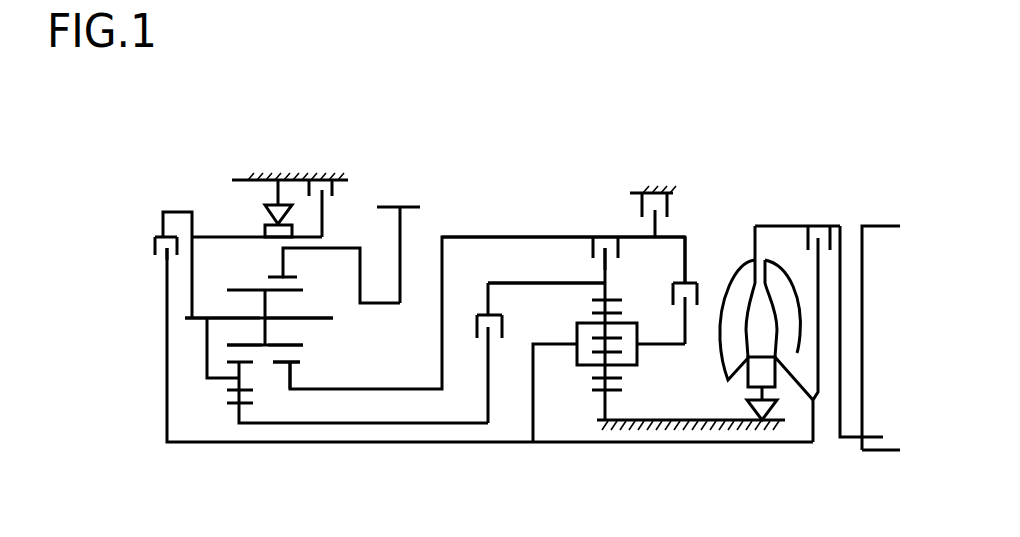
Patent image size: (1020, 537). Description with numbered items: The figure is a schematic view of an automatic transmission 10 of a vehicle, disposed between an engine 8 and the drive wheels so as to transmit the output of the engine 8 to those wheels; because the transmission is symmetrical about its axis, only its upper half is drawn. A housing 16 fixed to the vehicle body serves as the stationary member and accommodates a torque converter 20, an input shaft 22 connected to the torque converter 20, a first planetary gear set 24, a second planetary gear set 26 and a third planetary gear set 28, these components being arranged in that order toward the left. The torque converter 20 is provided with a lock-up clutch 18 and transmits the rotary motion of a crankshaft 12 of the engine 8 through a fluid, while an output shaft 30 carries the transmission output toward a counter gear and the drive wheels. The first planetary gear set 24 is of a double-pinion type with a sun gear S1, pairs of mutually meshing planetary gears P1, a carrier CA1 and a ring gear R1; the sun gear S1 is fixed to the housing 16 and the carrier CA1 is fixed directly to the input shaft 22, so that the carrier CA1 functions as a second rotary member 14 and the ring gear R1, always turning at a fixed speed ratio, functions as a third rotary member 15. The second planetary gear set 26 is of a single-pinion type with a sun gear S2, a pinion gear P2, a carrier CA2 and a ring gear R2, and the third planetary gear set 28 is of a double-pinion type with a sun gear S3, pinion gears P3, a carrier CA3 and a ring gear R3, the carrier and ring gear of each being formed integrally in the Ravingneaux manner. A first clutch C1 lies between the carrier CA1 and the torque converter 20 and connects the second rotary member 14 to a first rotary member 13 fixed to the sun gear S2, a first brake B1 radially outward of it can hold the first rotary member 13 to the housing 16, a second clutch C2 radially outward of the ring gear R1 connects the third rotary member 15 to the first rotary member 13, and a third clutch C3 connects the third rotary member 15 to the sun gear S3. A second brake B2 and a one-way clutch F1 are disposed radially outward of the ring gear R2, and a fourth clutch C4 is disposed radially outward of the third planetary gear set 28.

The automatic transmission 10 is at (737, 115).
The engine 8 is at (883, 233).
The crankshaft 12 is at (849, 440).
The second rotary member 14 is at (678, 345).
The third rotary member 15 is at (530, 283).
The housing 16 is at (250, 178).
The lock-up clutch 18 is at (838, 226).
The torque converter 20 is at (778, 209).
The input shaft 22 is at (754, 442).
The first planetary gear set 24 is at (610, 461).
The second planetary gear set 26 is at (298, 460).
The third planetary gear set 28 is at (240, 461).
The output shaft 30 is at (387, 207).
The first rotary member 13 is at (566, 237).
The one-way clutch F1 is at (278, 195).
The first brake B1 is at (655, 199).
The second brake B2 is at (320, 195).
The first clutch C1 is at (678, 290).
The second clutch C2 is at (619, 253).
The third clutch C3 is at (496, 353).
The fourth clutch C4 is at (161, 265).
The sun gear S1 is at (596, 390).
The sun gear S2 is at (293, 367).
The sun gear S3 is at (245, 402).
The planetary gears P1 is at (620, 378).
The pinion gear P2 is at (289, 345).
The pinion gears P3 is at (243, 344).
The ring gear R1 is at (612, 298).
The ring gear R2 is at (290, 277).
The ring gear R3 is at (273, 277).
The carrier CA1 is at (557, 343).
The carrier CA2 is at (290, 317).
The carrier CA3 is at (240, 317).